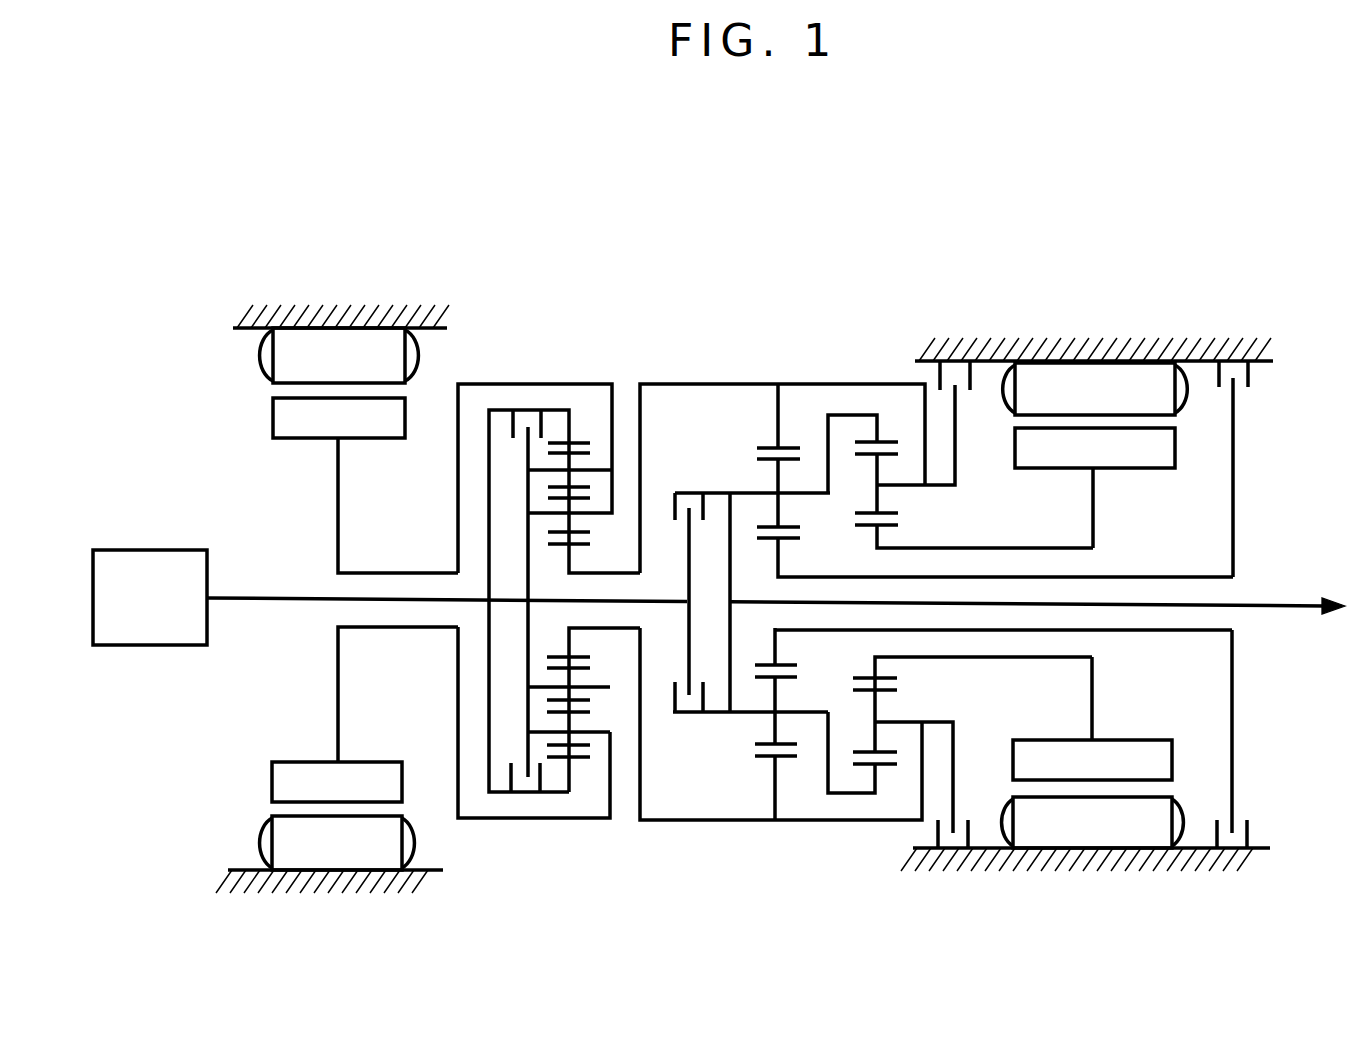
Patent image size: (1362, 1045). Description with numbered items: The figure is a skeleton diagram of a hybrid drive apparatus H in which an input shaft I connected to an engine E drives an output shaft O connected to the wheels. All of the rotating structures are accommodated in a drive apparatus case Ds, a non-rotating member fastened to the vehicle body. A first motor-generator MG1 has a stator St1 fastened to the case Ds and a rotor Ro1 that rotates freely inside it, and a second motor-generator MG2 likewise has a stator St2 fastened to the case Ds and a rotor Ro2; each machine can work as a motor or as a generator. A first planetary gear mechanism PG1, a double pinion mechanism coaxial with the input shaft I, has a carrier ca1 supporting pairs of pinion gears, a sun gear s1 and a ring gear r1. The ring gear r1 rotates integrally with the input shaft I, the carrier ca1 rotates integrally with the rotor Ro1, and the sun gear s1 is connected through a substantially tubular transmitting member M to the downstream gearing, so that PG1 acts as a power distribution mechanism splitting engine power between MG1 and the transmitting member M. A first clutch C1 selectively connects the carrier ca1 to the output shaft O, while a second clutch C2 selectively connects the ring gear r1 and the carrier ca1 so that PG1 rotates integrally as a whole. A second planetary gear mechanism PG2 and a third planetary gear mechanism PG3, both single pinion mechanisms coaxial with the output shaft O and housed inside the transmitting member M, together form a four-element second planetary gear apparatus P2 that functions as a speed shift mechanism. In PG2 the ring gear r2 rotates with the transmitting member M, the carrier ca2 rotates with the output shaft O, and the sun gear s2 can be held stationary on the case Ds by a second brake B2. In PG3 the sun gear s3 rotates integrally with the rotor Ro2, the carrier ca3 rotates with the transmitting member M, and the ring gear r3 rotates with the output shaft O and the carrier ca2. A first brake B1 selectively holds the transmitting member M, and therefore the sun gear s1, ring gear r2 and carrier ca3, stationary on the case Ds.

The hybrid drive apparatus H is at (195, 225).
The engine E is at (150, 550).
The input shaft I is at (263, 598).
The output shaft O is at (1295, 610).
The drive apparatus case Ds is at (345, 310).
The first motor-generator MG1 is at (282, 599).
The stator St1 is at (339, 599).
The rotor Ro1 is at (365, 600).
The second motor-generator MG2 is at (1170, 605).
The stator St2 is at (1095, 605).
The rotor Ro2 is at (1094, 604).
The first planetary gear mechanism PG1 is at (523, 566).
The sun gear s1 is at (557, 653).
The carrier ca1 is at (613, 480).
The ring gear r1 is at (577, 760).
The second clutch C2 is at (508, 777).
The first clutch C1 is at (685, 713).
The transmitting member M is at (685, 822).
The second planetary gear apparatus P2 is at (947, 572).
The second planetary gear mechanism PG2 is at (947, 575).
The third planetary gear mechanism PG3 is at (1016, 597).
The carrier ca2 is at (738, 487).
The sun gear s2 is at (787, 663).
The ring gear r2 is at (787, 760).
The carrier ca3 is at (947, 487).
The sun gear s3 is at (888, 528).
The ring gear r3 is at (883, 768).
The first brake B1 is at (972, 378).
The second brake B2 is at (1252, 375).